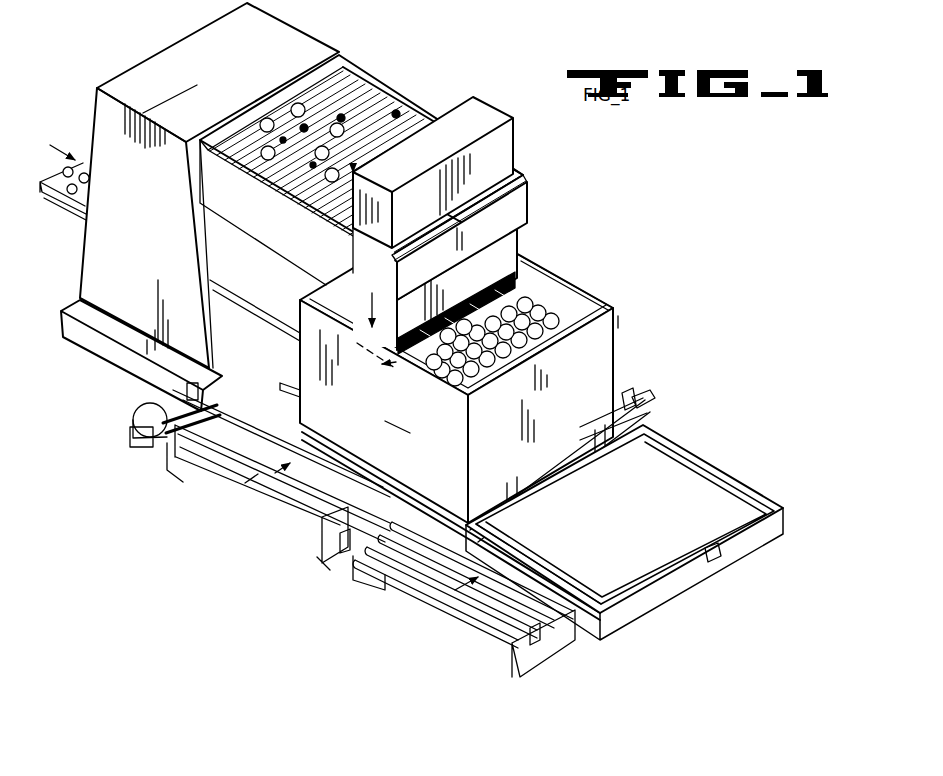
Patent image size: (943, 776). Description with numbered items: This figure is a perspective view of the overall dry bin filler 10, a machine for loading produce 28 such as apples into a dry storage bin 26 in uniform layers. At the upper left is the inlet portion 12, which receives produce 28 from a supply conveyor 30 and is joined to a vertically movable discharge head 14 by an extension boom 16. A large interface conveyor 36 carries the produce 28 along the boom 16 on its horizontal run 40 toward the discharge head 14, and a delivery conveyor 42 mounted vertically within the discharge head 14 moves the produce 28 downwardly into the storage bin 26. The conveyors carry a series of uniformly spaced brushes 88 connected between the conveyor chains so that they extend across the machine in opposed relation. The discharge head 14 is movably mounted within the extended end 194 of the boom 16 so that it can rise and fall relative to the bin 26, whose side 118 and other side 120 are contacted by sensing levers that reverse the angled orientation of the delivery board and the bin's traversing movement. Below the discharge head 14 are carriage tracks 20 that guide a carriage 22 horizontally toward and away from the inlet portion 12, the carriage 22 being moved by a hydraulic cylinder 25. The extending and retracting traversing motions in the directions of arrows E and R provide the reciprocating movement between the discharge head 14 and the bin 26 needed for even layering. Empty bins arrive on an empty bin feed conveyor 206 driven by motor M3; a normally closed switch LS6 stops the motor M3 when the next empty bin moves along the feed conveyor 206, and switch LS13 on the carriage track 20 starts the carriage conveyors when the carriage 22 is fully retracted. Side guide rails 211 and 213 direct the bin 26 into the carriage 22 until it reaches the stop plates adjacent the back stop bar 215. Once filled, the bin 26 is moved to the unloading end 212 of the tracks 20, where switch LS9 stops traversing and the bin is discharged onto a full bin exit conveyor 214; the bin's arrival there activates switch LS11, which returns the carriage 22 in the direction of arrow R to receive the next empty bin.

The dry bin filler 10 is at (590, 162).
The inlet portion 12 is at (107, 90).
The discharge head 14 is at (513, 144).
The extension boom 16 is at (252, 217).
The carriage tracks 20 is at (693, 450).
The carriage 22 is at (654, 397).
The hydraulic cylinder 25 is at (233, 297).
The dry storage bin 26 is at (605, 290).
The produce 28 is at (268, 120).
The supply conveyor 30 is at (84, 198).
The interface conveyor 36 is at (392, 112).
The horizontal run 40 is at (338, 72).
The delivery conveyor 42 is at (520, 275).
The brushes 88 is at (398, 112).
The side of the bin 118 is at (340, 288).
The other side of the storage bin 120 is at (619, 321).
The extended end of the boom 194 is at (527, 190).
The empty bin feed conveyor 206 is at (225, 482).
The side guide rail 211 is at (295, 388).
The unloading end 212 is at (553, 583).
The side guide rail 213 is at (643, 412).
The full bin exit conveyor 214 is at (440, 607).
The back stop bar 215 is at (624, 393).
The switch LS6 is at (342, 563).
The switch LS9 is at (718, 563).
The switch LS11 is at (543, 657).
The switch LS13 is at (187, 392).
The motor M3 is at (132, 418).
The arrow E is at (623, 547).
The arrow R is at (645, 520).